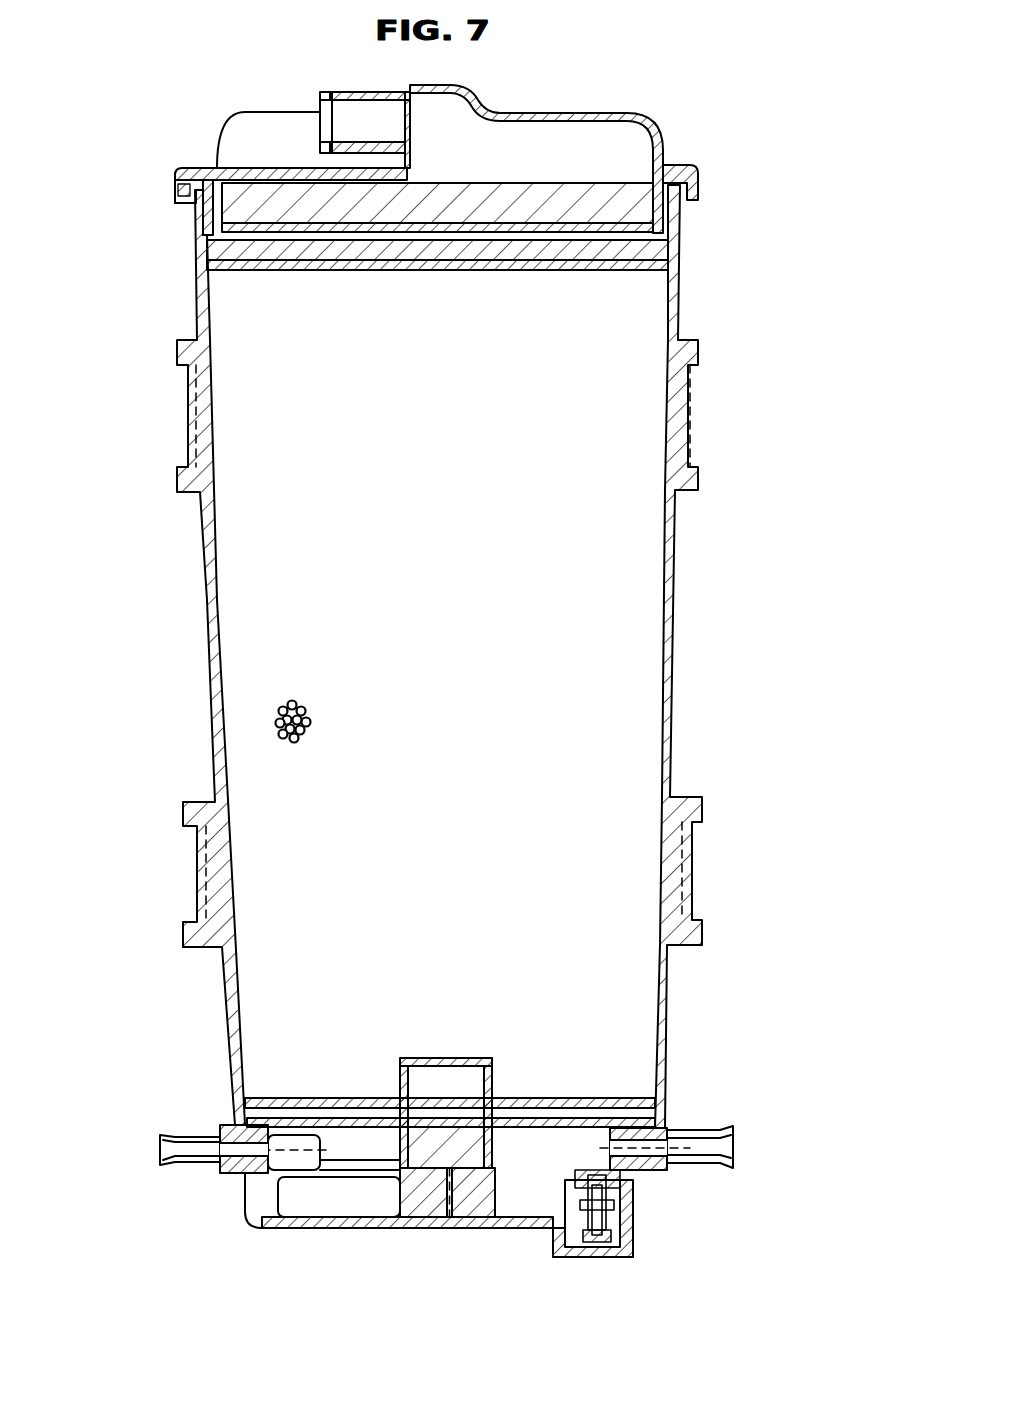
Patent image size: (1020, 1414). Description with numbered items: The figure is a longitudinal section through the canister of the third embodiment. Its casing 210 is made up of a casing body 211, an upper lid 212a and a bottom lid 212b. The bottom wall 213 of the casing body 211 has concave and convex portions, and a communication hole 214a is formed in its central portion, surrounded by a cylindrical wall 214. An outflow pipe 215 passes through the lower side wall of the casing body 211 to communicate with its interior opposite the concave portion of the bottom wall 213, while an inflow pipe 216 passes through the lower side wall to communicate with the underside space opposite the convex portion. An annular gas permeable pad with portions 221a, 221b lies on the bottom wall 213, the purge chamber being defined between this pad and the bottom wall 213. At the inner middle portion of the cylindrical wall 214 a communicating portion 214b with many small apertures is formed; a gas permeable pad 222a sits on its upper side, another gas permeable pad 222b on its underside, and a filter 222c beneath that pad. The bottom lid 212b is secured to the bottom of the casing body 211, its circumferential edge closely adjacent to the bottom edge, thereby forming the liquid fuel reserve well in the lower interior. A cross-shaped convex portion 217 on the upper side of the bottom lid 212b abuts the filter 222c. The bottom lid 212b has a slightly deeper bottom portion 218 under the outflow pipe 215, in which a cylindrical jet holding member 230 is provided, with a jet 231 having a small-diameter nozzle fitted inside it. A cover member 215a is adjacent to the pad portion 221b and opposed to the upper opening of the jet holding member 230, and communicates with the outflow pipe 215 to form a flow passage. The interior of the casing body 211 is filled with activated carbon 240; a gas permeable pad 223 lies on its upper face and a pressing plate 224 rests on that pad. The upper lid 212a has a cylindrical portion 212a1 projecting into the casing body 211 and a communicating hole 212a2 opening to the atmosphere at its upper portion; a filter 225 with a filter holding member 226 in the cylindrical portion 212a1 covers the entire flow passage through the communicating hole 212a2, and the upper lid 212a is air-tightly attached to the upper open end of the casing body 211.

The casing 210 is at (488, 642).
The casing body 211 is at (673, 560).
The upper lid 212a is at (397, 155).
The cylindrical portion 212a1 is at (205, 212).
The communicating hole 212a2 is at (345, 92).
The bottom lid 212b is at (420, 1228).
The bottom wall 213 is at (345, 1165).
The cylindrical wall 214 is at (498, 1062).
The communication hole 214a is at (445, 1073).
The communicating portion 214b is at (463, 1100).
The outflow pipe 215 is at (710, 1122).
The cover member 215a is at (640, 1140).
The inflow pipe 216 is at (190, 1162).
The cross-shaped convex portion 217 is at (400, 1195).
The deeper bottom portion 218 is at (620, 1257).
The gas permeable pad portion 221a is at (262, 1105).
The gas permeable pad portion 221b is at (655, 1115).
The gas permeable pad 222a is at (420, 1095).
The gas permeable pad 222b is at (405, 1095).
The filter 222c is at (528, 1098).
The gas permeable pad 223 is at (605, 268).
The pressing plate 224 is at (668, 250).
The filter 225 is at (495, 190).
The filter holding member 226 is at (592, 222).
The jet holding member 230 is at (615, 1205).
The jet 231 is at (600, 1250).
The activated carbon 240 is at (280, 713).